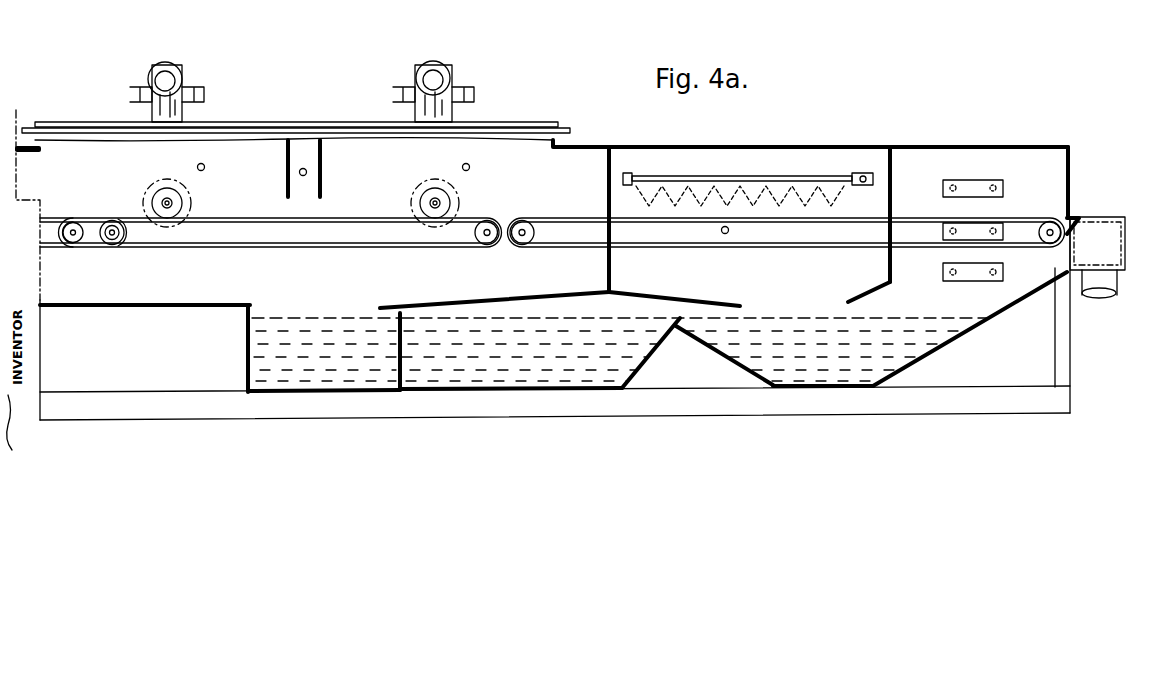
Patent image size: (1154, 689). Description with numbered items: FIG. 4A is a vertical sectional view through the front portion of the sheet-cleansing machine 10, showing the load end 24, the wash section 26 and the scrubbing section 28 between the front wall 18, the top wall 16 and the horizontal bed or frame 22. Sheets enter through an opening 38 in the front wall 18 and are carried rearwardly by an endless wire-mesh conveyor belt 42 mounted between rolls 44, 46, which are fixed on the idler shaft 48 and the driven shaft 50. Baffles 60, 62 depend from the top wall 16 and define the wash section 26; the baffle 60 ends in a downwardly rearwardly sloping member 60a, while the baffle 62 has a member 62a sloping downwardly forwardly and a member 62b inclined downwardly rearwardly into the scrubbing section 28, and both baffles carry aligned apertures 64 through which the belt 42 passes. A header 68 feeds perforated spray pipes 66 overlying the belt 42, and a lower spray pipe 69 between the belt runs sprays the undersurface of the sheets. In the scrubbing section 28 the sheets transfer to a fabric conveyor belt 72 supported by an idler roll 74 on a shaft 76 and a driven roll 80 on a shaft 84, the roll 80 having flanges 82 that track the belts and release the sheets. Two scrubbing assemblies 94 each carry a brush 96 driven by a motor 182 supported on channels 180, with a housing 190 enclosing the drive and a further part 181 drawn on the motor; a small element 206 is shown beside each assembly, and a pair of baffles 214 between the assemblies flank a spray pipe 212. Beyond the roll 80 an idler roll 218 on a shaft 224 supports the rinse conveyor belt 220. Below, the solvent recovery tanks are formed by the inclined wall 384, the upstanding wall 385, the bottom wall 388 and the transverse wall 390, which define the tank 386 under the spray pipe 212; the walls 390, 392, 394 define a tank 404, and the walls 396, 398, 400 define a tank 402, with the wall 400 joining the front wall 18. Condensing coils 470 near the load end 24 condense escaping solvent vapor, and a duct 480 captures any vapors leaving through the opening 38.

The machine 10 is at (566, 255).
The top wall 16 is at (700, 147).
The front wall 18 is at (1071, 168).
The horizontal bed or frame 22 is at (1062, 401).
The load end 24 is at (1086, 215).
The wash section 26 is at (748, 157).
The scrubbing section 28 is at (344, 160).
The opening 38 is at (1071, 200).
The endless conveyor belt 42 is at (794, 218).
The roll 44 is at (534, 232).
The roll 46 is at (1051, 226).
The idler shaft 48 is at (1047, 241).
The driven shaft 50 is at (522, 228).
The baffle 60 is at (869, 208).
The downwardly rearwardly sloping member 60a is at (862, 291).
The baffle 62 is at (560, 227).
The member 62a is at (661, 291).
The member 62b is at (540, 297).
The apertures 64 is at (605, 218).
The spray pipes 66 is at (760, 177).
The header 68 is at (862, 175).
The lower spray pipe 69 is at (729, 231).
The endless conveyor belt 72 is at (273, 230).
The idler roll 74 is at (480, 241).
The shaft 76 is at (489, 220).
The driven roll 80 is at (127, 243).
The flanges 82 is at (113, 221).
The shaft 84 is at (108, 246).
The scrubbing assemblies 94 is at (309, 184).
The brush 96 is at (173, 202).
The channels 180 is at (138, 101).
The motor housing 181 is at (185, 101).
The driving motor 182 is at (169, 63).
The housing 190 is at (186, 75).
The pivot pin 206 is at (205, 167).
The spray pipe 212 is at (303, 176).
The baffles 214 is at (286, 181).
The idler roll 218 is at (80, 224).
The endless conveyor belt 220 is at (60, 217).
The shaft 224 is at (73, 244).
The wall 384 is at (145, 310).
The upstanding wall 385 is at (246, 341).
The tank 386 is at (335, 317).
The bottom wall 388 is at (318, 392).
The transverse upstanding wall 390 is at (408, 359).
The bottom wall 392 is at (570, 389).
The transverse wall 394 is at (650, 366).
The wall 396 is at (712, 359).
The bottom wall 398 is at (808, 389).
The wall 400 is at (968, 336).
The tank 402 is at (772, 340).
The tank 404 is at (527, 356).
The condensing coils 470 is at (985, 166).
The duct 480 is at (1116, 293).